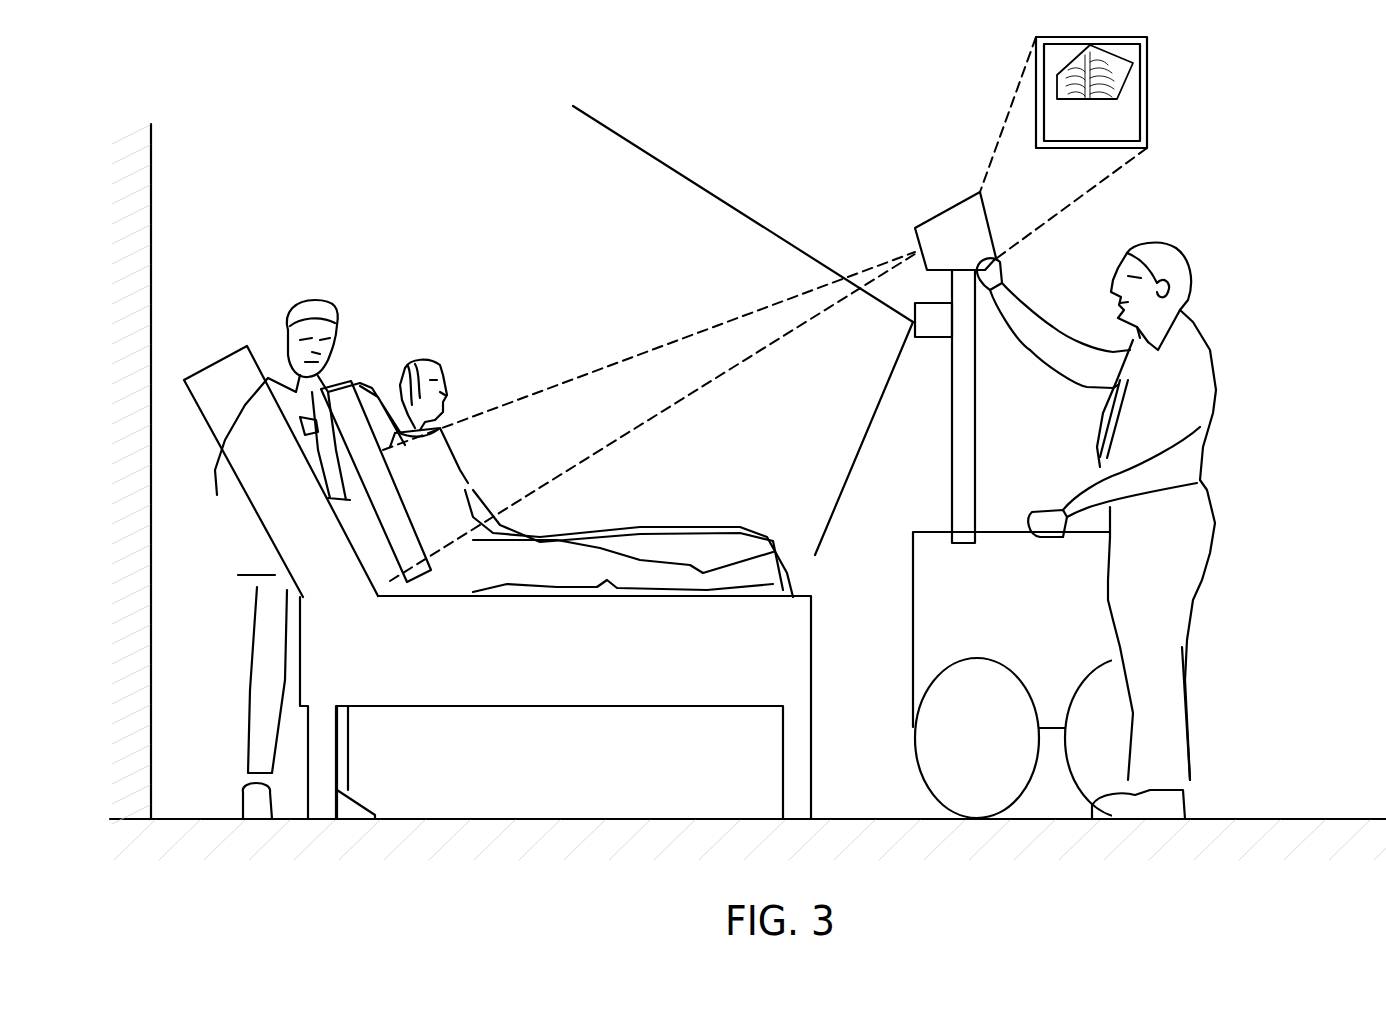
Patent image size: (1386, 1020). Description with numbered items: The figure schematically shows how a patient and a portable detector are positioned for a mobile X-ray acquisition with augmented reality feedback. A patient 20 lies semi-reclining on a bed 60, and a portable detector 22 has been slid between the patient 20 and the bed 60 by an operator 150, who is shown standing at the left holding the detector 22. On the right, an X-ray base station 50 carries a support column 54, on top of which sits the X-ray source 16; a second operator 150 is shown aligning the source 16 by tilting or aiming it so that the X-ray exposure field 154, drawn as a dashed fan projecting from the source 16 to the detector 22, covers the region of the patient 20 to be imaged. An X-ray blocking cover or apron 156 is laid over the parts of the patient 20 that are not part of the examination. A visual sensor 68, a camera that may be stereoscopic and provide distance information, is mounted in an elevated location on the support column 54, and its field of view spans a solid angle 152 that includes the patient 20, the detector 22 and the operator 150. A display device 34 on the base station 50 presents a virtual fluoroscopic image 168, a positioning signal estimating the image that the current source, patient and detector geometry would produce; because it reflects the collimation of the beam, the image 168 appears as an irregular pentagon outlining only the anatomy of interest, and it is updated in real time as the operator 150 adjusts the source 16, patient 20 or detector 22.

The X-ray source 16 is at (944, 210).
The patient 20 is at (441, 499).
The portable detector 22 is at (380, 530).
The display device 34 is at (1150, 75).
The X-ray base station 50 is at (1048, 631).
The support column 54 is at (977, 448).
The bed 60 is at (565, 665).
The visual sensor 68 is at (930, 340).
The operator 150 is at (282, 302).
The solid angle 152 is at (880, 388).
The X-ray exposure field 154 is at (640, 425).
The X-ray blocking cover or apron 156 is at (657, 525).
The virtual fluoroscopic image 168 is at (1123, 102).